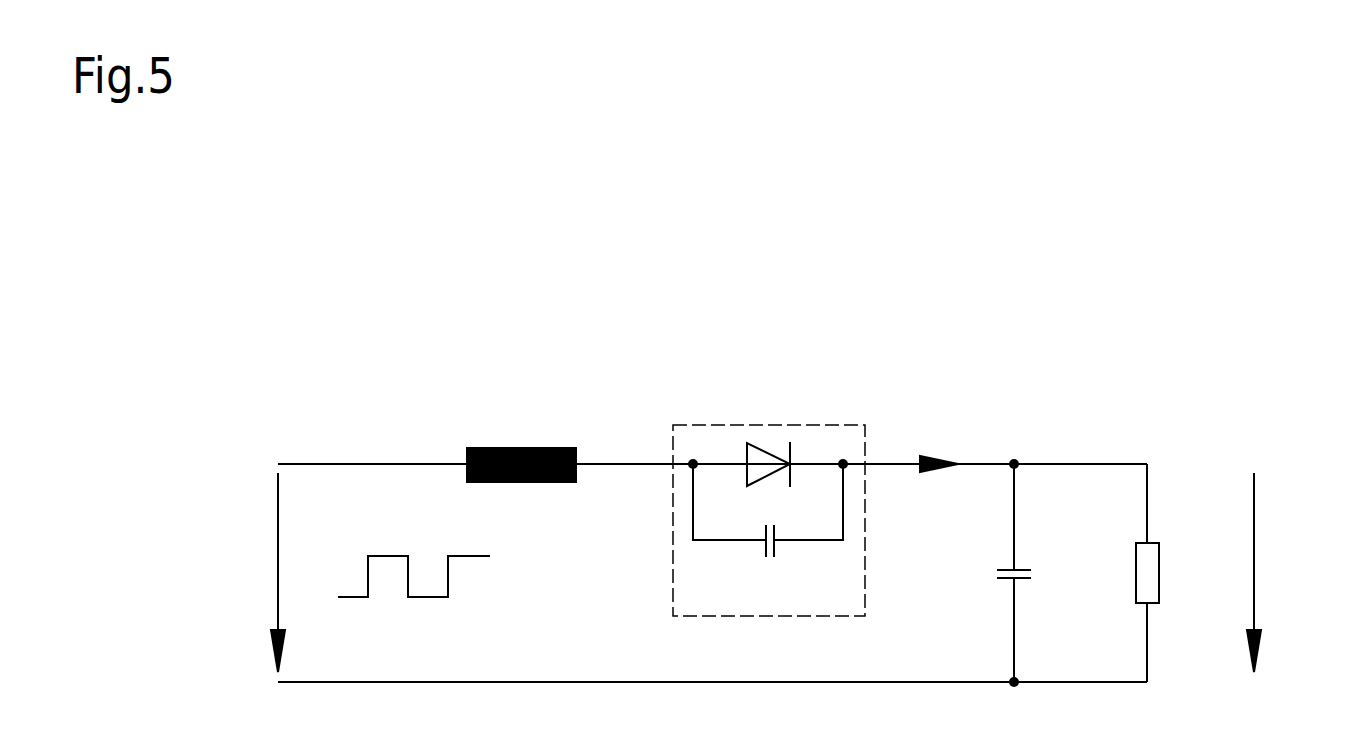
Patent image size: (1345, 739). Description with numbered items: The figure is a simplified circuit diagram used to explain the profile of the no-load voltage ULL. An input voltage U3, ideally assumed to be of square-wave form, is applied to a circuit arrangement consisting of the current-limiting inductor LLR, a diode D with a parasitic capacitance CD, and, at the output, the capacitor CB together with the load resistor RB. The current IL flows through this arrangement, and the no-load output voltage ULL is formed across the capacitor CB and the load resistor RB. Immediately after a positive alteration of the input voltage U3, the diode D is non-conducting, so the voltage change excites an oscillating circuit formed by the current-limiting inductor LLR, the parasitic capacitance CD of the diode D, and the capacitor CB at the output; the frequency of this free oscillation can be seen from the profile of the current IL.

The current-limiting inductor LLR is at (521, 433).
The input voltage U3 is at (380, 572).
The diode D is at (769, 494).
The parasitic capacitance CD is at (768, 533).
The current IL is at (940, 427).
The capacitor CB is at (1040, 573).
The load resistor RB is at (1179, 573).
The no-load voltage ULL is at (1288, 572).